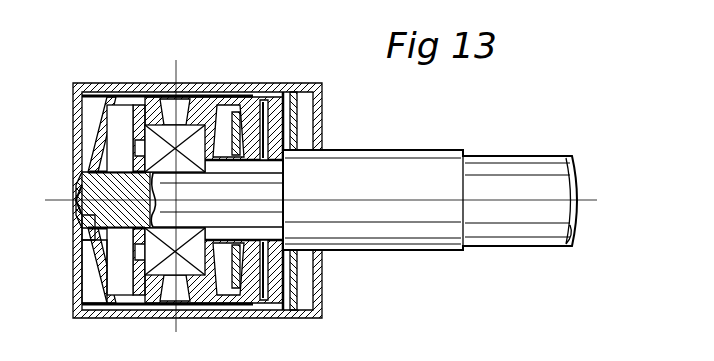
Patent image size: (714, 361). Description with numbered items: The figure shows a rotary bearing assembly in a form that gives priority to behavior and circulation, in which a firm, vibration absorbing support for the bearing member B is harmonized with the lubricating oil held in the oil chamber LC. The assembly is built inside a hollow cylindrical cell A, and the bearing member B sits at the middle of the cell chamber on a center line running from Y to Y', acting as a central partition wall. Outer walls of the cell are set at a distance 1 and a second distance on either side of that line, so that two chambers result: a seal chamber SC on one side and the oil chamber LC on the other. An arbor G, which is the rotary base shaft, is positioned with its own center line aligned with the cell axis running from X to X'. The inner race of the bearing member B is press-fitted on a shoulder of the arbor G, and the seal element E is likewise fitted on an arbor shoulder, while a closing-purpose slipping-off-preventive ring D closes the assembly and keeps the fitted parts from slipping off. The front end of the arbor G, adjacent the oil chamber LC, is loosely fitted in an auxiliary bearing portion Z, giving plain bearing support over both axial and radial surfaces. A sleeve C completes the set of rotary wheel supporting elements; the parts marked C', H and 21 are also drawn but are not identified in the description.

The cell A is at (113, 85).
The bearing member B is at (154, 95).
The sleeve C is at (126, 105).
The conical spring member (lower) C' is at (194, 292).
The seal chamber SC is at (272, 90).
The closing-purpose slipping-off-preventive ring D is at (300, 112).
The seal element E is at (300, 142).
The arbor G is at (432, 158).
The hub H is at (80, 132).
The auxiliary bearing portion Z is at (78, 160).
The distance 1 is at (72, 218).
The oil chamber LC is at (78, 266).
The housing cover 21 is at (322, 295).
The center axis end point X is at (87, 201).
The center axis end point X' is at (383, 201).
The center line end point Y is at (176, 119).
The center line end point Y' is at (175, 278).